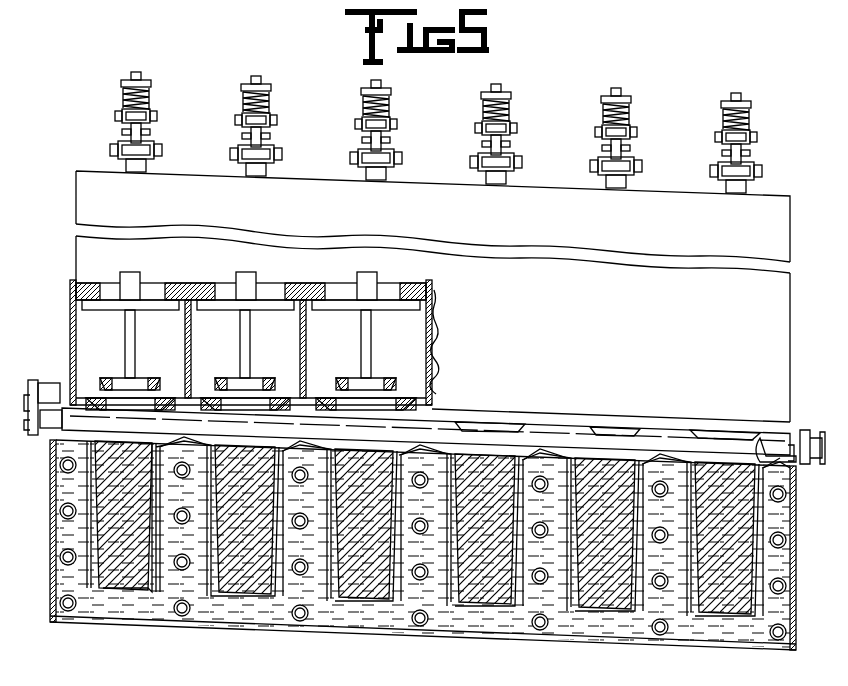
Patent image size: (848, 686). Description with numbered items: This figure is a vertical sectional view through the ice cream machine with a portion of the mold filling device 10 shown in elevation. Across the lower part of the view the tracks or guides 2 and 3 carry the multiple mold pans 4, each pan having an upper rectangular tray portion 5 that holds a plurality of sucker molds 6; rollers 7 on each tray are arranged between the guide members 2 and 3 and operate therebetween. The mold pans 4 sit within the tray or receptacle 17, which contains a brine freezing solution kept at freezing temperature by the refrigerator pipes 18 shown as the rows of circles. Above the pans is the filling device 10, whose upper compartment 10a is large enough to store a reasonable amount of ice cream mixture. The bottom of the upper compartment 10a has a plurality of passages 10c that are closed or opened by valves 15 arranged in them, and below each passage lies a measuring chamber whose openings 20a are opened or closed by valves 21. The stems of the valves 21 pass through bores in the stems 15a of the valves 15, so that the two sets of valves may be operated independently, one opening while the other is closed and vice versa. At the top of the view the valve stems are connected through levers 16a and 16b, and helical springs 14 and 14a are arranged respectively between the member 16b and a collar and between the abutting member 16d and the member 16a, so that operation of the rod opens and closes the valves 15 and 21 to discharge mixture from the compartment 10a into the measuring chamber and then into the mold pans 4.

The track or guide 2 is at (47, 383).
The track or guide 3 is at (46, 442).
The mold pan 4 is at (768, 440).
The tray portion 5 is at (663, 447).
The sucker mold 6 is at (118, 592).
The roller 7 is at (50, 472).
The filling device 10 is at (774, 331).
The upper compartment 10a is at (430, 293).
The passage 10c is at (280, 296).
The helical spring 14 is at (147, 138).
The helical spring 14a is at (150, 98).
The valve 15 is at (108, 303).
The valve stem 15a is at (135, 283).
The lever 16a is at (278, 122).
The lever 16b is at (163, 154).
The abutting member 16d is at (152, 84).
The tray or receptacle 17 is at (766, 651).
The refrigerator pipe 18 is at (565, 440).
The opening 20a is at (141, 402).
The valve 21 is at (106, 385).